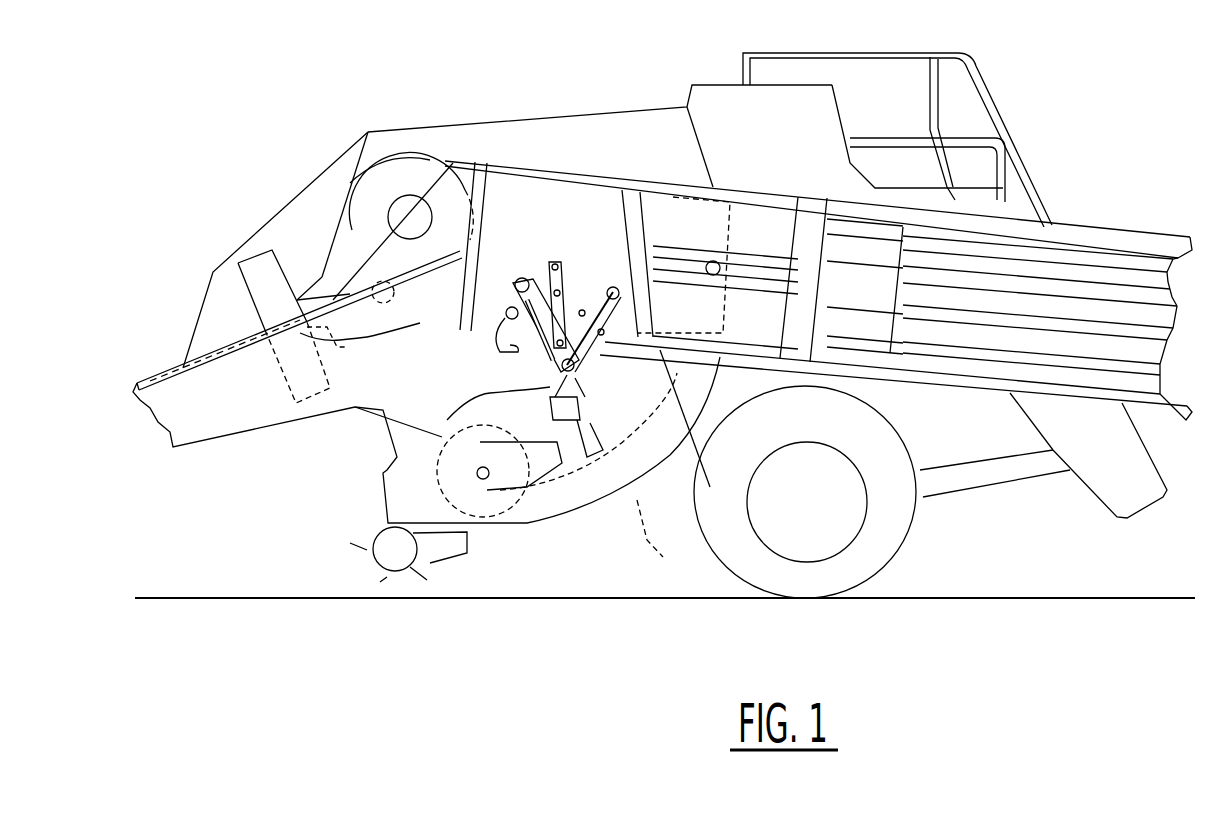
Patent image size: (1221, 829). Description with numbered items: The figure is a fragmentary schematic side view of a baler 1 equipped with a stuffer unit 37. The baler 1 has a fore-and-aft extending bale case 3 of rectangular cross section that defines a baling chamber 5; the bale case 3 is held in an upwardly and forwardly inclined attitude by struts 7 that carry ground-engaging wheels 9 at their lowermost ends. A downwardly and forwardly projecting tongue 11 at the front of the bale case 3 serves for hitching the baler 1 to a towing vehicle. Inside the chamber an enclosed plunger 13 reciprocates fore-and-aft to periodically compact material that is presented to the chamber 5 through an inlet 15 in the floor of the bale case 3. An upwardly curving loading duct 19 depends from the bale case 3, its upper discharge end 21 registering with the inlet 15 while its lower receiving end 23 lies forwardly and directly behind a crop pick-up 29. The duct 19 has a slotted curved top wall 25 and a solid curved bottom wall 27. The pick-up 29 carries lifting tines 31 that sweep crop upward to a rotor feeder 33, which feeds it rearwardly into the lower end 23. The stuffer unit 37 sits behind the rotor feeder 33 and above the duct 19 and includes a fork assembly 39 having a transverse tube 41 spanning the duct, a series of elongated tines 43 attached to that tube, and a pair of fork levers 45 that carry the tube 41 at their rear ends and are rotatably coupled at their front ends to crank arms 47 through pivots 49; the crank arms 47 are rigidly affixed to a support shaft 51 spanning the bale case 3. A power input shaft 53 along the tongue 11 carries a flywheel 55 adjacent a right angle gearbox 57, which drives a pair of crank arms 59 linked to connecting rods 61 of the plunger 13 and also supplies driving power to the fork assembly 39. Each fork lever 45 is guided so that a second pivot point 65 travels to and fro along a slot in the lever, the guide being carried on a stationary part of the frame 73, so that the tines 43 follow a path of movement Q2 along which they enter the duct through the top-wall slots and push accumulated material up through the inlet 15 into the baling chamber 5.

The baler 1 is at (182, 133).
The bale case 3 is at (648, 138).
The baling chamber 5 is at (765, 215).
The struts 7 is at (717, 357).
The ground-engaging wheels 9 is at (897, 533).
The tongue 11 is at (218, 407).
The plunger 13 is at (680, 230).
The inlet 15 is at (674, 325).
The loading duct 19 is at (567, 497).
The upper discharge end 21 is at (717, 383).
The lower receiving end 23 is at (532, 510).
The curved top wall 25 is at (530, 462).
The curved bottom wall 27 is at (600, 500).
The crop pick-up 29 is at (387, 558).
The lifting tines 31 is at (410, 580).
The rotor feeder 33 is at (437, 467).
The stuffer unit 37 is at (559, 190).
The fork assembly 39 is at (485, 460).
The transverse tube 41 is at (580, 408).
The tines 43 is at (605, 440).
The fork levers 45 is at (583, 370).
The crank arms 47 is at (560, 362).
The pivots 49 is at (520, 287).
The support shaft 51 is at (510, 316).
The power input shaft 53 is at (157, 377).
The flywheel 55 is at (263, 267).
The right angle gearbox 57 is at (405, 170).
The crank arms 59 is at (397, 220).
The connecting rods 61 is at (460, 325).
The second pivot point 65 is at (515, 398).
The frame 73 is at (563, 262).
The path of movement Q2 is at (682, 567).